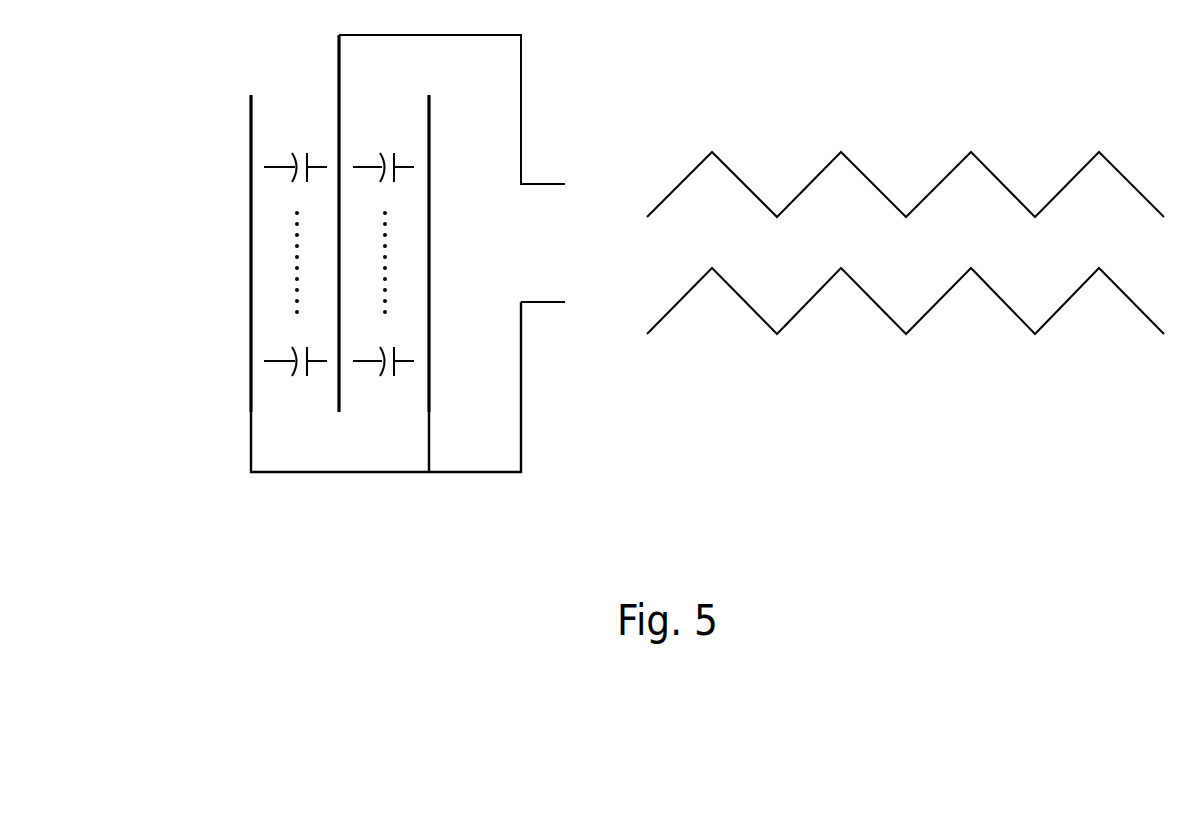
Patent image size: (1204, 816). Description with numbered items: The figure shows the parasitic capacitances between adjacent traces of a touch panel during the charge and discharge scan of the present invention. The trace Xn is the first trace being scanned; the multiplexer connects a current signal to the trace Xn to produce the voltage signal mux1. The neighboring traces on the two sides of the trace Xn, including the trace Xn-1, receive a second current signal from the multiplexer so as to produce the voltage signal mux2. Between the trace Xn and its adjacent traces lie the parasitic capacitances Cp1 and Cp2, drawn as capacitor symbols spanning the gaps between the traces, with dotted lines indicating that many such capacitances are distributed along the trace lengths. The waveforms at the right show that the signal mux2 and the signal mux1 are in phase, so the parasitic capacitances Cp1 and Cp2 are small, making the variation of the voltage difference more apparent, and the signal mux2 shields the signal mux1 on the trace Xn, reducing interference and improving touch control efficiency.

The parasitic capacitance Cp1 is at (296, 245).
The parasitic capacitance Cp2 is at (384, 245).
The trace Xn-1 is at (217, 272).
The trace Xn is at (340, 242).
The voltage signal mux1 is at (868, 184).
The voltage signal mux2 is at (870, 301).